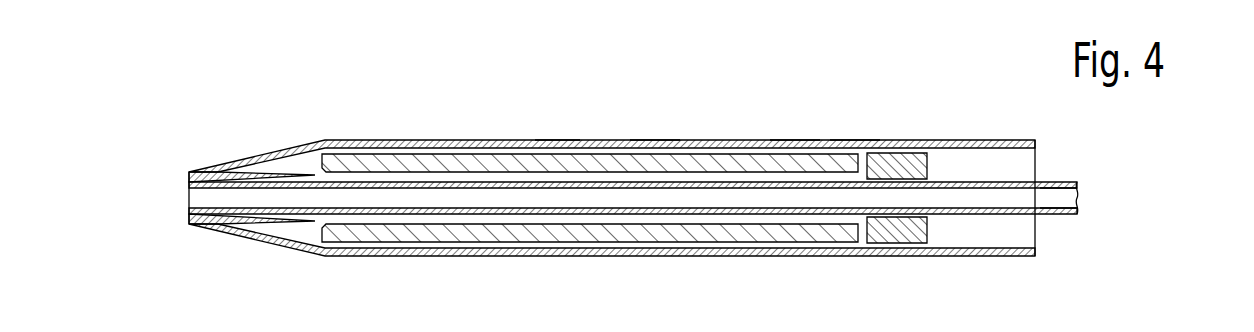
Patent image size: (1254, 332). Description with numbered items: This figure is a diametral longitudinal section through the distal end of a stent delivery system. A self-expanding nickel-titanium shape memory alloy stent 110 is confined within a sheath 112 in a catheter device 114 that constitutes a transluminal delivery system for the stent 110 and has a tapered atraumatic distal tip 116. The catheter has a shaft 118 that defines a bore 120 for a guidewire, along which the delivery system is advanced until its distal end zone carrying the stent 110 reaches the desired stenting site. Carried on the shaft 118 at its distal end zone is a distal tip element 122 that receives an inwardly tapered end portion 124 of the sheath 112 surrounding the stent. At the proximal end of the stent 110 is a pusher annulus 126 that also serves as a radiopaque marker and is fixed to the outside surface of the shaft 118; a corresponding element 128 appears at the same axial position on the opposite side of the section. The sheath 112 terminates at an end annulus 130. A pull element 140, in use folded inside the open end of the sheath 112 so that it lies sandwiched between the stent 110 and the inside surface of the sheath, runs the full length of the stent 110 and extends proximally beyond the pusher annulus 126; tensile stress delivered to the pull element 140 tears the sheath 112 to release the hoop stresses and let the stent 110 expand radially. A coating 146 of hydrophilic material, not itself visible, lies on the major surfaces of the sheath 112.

The self-expanding nickel-titanium shape memory alloy stent 110 is at (450, 166).
The sheath 112 is at (653, 140).
The catheter device 114 is at (852, 140).
The tapered atraumatic distal tip 116 is at (193, 173).
The shaft 118 is at (1064, 215).
The bore for a guidewire 120 is at (1066, 195).
The distal tip element 122 is at (202, 225).
The inwardly tapered end portion 124 is at (285, 148).
The pusher annulus 126 is at (924, 158).
The proximal ring 128 is at (855, 232).
The end annulus 130 is at (217, 172).
The pull element 140 is at (557, 140).
The coating of hydrophilic material 146 is at (792, 140).